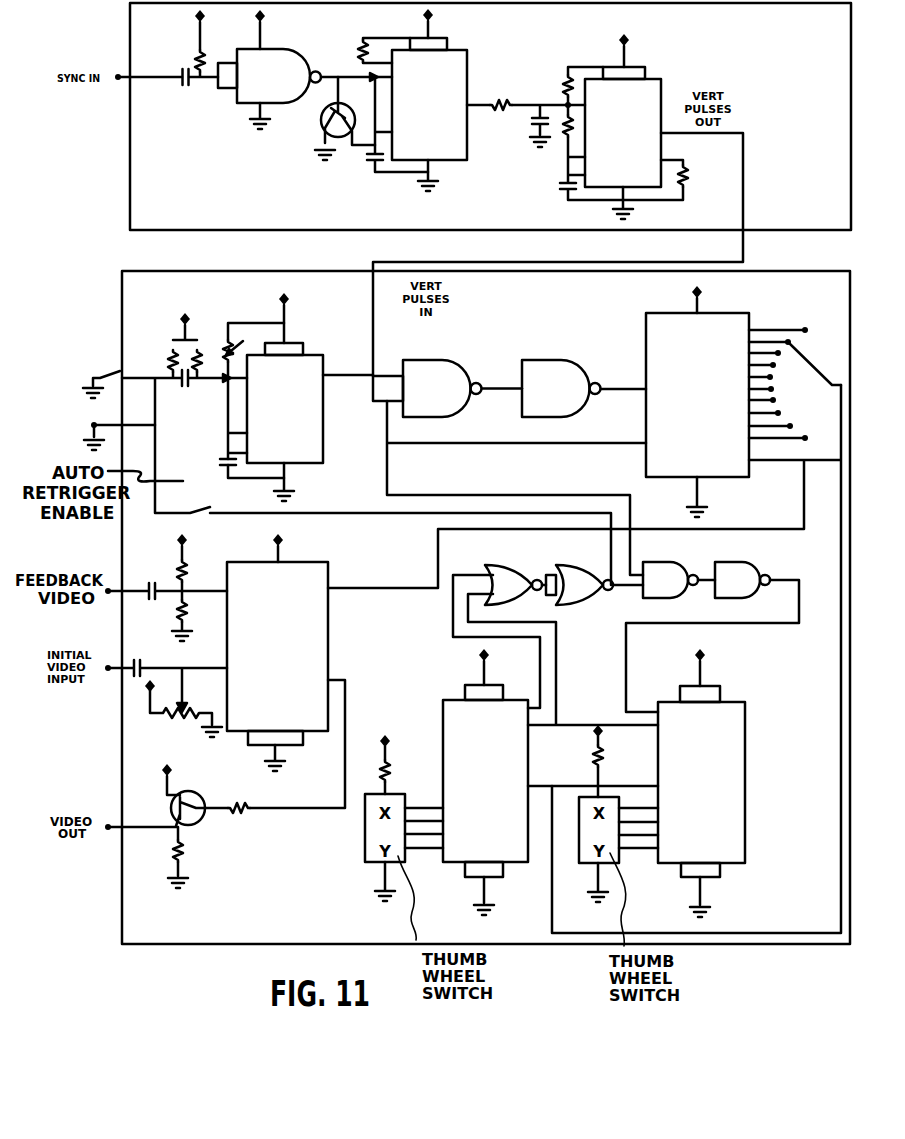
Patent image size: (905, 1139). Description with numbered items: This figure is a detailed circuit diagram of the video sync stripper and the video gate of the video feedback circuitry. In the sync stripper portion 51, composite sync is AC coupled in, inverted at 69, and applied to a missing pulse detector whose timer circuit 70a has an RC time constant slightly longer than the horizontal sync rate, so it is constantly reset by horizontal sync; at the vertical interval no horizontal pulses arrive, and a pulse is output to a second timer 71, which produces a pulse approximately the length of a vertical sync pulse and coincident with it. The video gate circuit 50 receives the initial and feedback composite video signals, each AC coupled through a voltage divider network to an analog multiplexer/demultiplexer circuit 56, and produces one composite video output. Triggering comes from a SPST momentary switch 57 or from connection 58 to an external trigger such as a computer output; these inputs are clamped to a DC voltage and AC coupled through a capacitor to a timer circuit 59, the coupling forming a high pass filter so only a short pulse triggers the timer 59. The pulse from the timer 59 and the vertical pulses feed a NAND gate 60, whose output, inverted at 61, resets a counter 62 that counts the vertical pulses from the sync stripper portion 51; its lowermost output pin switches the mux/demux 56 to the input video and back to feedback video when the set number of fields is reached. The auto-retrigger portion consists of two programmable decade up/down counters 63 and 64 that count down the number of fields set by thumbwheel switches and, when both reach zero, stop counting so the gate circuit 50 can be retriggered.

The sync stripper portion 51 is at (490, 116).
The inverter 69 is at (269, 69).
The timer circuit 70a is at (429, 100).
The second timer 71 is at (623, 126).
The video gate circuit 50 is at (486, 607).
The SPST momentary switch 57 is at (118, 373).
The connection to external trigger 58 is at (101, 436).
The timer circuit 59 is at (285, 397).
The NAND gate 60 is at (427, 388).
The inverter 61 is at (561, 388).
The counter 62 is at (743, 401).
The analog multiplexer/demultiplexer circuit 56 is at (277, 652).
The programmable decade up/down counter 63 is at (466, 782).
The programmable decade up/down counter 64 is at (682, 783).